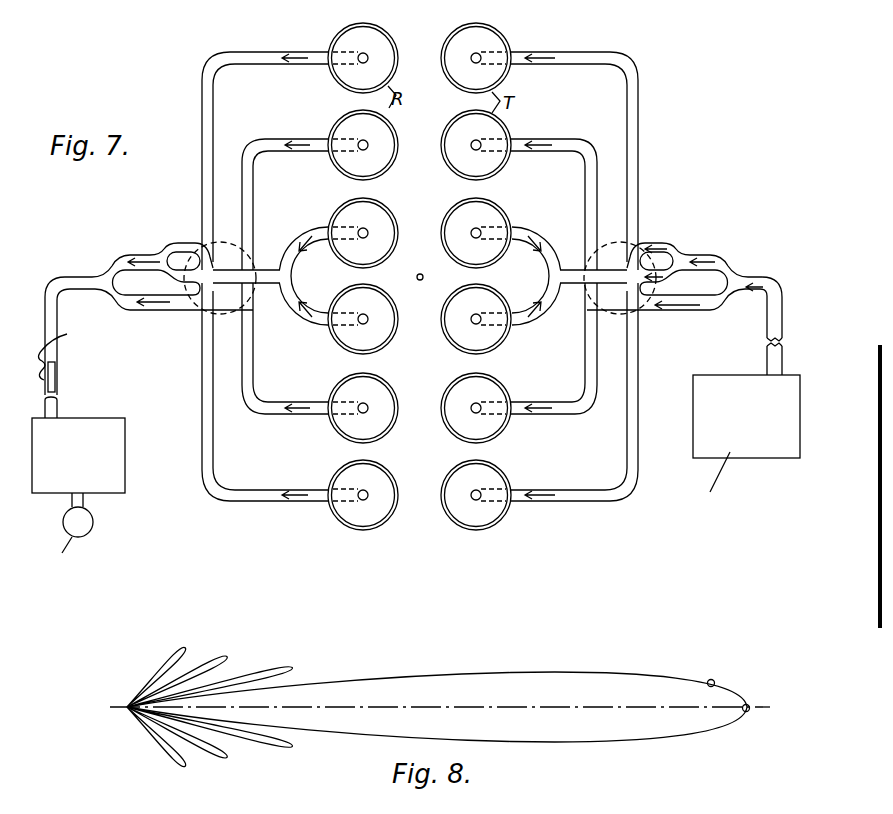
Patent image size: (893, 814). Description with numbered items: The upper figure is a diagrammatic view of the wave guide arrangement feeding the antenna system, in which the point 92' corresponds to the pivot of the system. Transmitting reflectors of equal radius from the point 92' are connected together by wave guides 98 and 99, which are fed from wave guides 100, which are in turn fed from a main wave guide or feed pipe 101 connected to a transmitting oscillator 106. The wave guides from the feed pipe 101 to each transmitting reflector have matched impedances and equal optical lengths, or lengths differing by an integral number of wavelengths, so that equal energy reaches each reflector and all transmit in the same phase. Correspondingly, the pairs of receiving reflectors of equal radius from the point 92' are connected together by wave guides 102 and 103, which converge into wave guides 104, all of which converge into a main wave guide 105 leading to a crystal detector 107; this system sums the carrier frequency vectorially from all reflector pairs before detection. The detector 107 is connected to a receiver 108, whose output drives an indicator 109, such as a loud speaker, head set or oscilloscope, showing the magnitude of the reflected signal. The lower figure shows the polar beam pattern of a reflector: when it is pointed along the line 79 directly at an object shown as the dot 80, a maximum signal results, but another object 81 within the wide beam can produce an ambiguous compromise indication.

In FIG. 8, the line 79 is at (594, 706).
In FIG. 8, the object 80 is at (748, 705).
In FIG. 8, the object 81 is at (713, 680).
In FIG. 7, the point 92' is at (423, 266).
In FIG. 7, the wave guide 98 is at (553, 69).
In FIG. 7, the wave guide 99 is at (522, 327).
In FIG. 7, the wave guides 100 is at (658, 242).
In FIG. 7, the main wave guide or feed pipe 101 is at (770, 276).
In FIG. 7, the wave guide 102 is at (316, 49).
In FIG. 7, the wave guide 103 is at (303, 327).
In FIG. 7, the wave guides 104 is at (200, 242).
In FIG. 7, the main wave guide 105 is at (78, 276).
In FIG. 7, the transmitting oscillator 106 is at (748, 375).
In FIG. 7, the crystal detector 107 is at (58, 378).
In FIG. 7, the receiver 108 is at (115, 470).
In FIG. 7, the indicator 109 is at (93, 523).